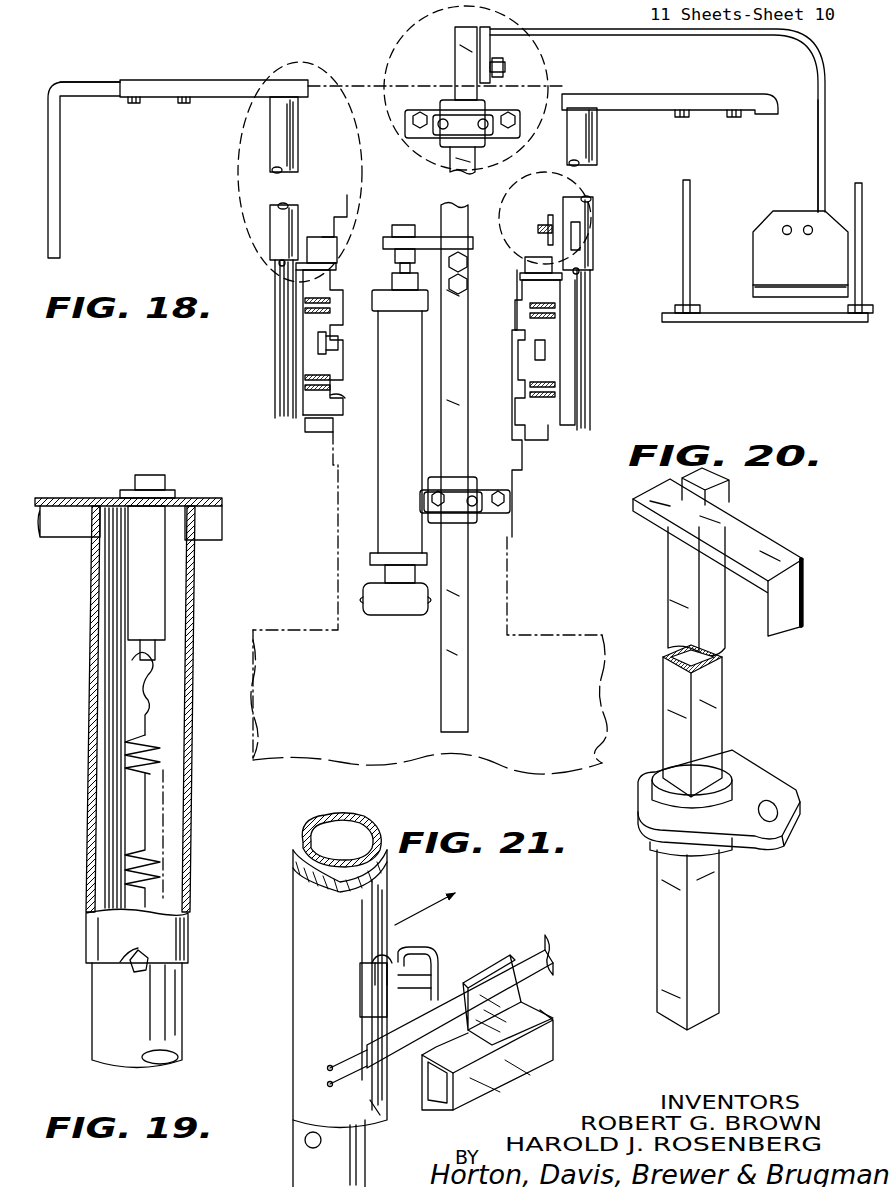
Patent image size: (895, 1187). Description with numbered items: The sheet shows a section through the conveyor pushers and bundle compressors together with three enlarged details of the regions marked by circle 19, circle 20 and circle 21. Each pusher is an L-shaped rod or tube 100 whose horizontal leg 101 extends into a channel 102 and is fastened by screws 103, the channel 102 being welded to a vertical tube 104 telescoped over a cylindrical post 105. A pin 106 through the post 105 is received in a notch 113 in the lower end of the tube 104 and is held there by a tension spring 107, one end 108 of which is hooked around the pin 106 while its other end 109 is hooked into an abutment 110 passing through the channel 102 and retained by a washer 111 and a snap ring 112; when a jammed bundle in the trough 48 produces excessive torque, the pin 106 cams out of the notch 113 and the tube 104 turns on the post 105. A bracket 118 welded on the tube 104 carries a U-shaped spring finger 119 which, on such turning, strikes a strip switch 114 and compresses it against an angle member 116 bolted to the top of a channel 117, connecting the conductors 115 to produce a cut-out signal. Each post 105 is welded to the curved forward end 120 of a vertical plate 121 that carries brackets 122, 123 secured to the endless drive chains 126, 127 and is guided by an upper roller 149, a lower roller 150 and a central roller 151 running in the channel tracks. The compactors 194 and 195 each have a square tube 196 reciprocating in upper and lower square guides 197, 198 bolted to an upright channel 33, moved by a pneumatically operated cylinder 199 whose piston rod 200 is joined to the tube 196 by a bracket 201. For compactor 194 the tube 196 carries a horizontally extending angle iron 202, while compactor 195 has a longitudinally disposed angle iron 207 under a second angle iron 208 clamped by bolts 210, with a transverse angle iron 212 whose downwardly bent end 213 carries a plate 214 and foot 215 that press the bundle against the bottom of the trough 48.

In FIG. 18, the circle 19 is at (238, 205).
In FIG. 18, the circle 20 is at (395, 48).
In FIG. 18, the circle 21 is at (598, 172).
In FIG. 18, the upright channel 33 is at (513, 535).
In FIG. 18, the trough 48 is at (702, 222).
In FIG. 18, the L-shaped rod or tube 100 is at (58, 190).
In FIG. 18, the horizontal leg 101 is at (80, 90).
In FIG. 18, the channel 102 is at (162, 80).
In FIG. 19, the channel 102 is at (95, 498).
In FIG. 18, the screws 103 is at (184, 103).
In FIG. 18, the vertical tube 104 is at (268, 148).
In FIG. 19, the vertical tube 104 is at (92, 590).
In FIG. 21, the vertical tube 104 is at (294, 898).
In FIG. 19, the cylindrical post 105 is at (90, 1020).
In FIG. 21, the cylindrical post 105 is at (302, 840).
In FIG. 19, the pin 106 is at (150, 962).
In FIG. 21, the pin 106 is at (313, 1148).
In FIG. 19, the tension spring 107 is at (160, 758).
In FIG. 19, the spring end 108 is at (180, 1005).
In FIG. 19, the other spring end 109 is at (155, 660).
In FIG. 19, the abutment 110 is at (165, 570).
In FIG. 19, the washer 111 is at (170, 492).
In FIG. 19, the snap ring 112 is at (130, 482).
In FIG. 19, the notch 113 is at (130, 966).
In FIG. 21, the notch 113 is at (378, 1122).
In FIG. 18, the strip switch 114 is at (535, 233).
In FIG. 21, the strip switch 114 is at (537, 950).
In FIG. 21, the conductors 115 is at (348, 1060).
In FIG. 21, the angle member 116 is at (492, 975).
In FIG. 21, the channel 117 is at (553, 1043).
In FIG. 21, the bracket 118 is at (358, 975).
In FIG. 21, the U-shaped spring finger 119 is at (440, 980).
In FIG. 18, the forward end 120 is at (570, 382).
In FIG. 18, the vertical plate 121 is at (297, 350).
In FIG. 18, the bracket 122 is at (328, 300).
In FIG. 18, the bracket 123 is at (325, 383).
In FIG. 18, the endless drive chain 126 is at (313, 302).
In FIG. 18, the endless drive chain 127 is at (310, 384).
In FIG. 18, the upper roller 149 is at (318, 240).
In FIG. 18, the lower roller 150 is at (318, 437).
In FIG. 18, the central roller 151 is at (330, 343).
In FIG. 20, the compactor 194 is at (742, 520).
In FIG. 18, the compactor 195 is at (818, 44).
In FIG. 18, the square tube 196 is at (508, 568).
In FIG. 18, the upper square guide 197 is at (448, 147).
In FIG. 18, the lower square guide 198 is at (465, 478).
In FIG. 18, the pneumatically operated cylinder 199 is at (414, 464).
In FIG. 18, the piston rod 200 is at (300, 278).
In FIG. 18, the bracket 201 is at (437, 240).
In FIG. 20, the horizontally extending angle iron 202 is at (770, 560).
In FIG. 18, the longitudinally disposed angle iron 207 is at (478, 26).
In FIG. 18, the second angle iron 208 is at (507, 62).
In FIG. 18, the bolts 210 is at (455, 68).
In FIG. 18, the transverse angle iron 212 is at (700, 74).
In FIG. 18, the downwardly bent end 213 is at (827, 118).
In FIG. 18, the plate 214 is at (816, 269).
In FIG. 18, the flange or foot 215 is at (797, 295).